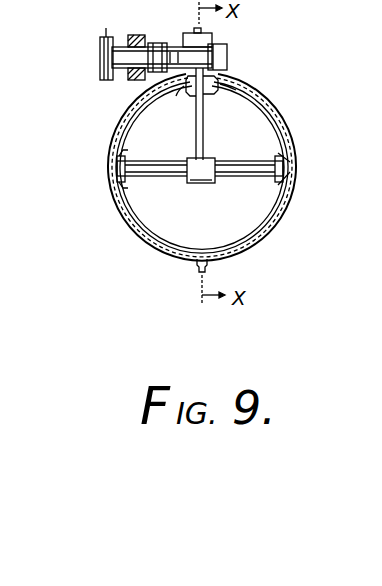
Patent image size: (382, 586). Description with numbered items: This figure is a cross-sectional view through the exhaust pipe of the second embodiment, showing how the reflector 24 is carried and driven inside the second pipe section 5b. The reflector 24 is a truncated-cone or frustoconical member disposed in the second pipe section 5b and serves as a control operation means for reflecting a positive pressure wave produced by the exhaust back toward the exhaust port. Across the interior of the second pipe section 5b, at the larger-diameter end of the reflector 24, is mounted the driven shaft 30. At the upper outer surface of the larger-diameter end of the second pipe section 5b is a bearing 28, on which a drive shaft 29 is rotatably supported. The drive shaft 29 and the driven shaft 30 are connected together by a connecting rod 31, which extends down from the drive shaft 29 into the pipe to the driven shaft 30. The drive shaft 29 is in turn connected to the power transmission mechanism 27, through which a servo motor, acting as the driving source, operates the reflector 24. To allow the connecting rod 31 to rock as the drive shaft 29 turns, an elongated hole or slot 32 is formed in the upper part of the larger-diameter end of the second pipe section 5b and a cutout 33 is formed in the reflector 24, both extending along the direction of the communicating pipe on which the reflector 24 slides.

The reflector 24 is at (113, 212).
The second pipe section 5b is at (281, 131).
The power transmission mechanism 27 is at (94, 31).
The bearing 28 is at (158, 47).
The drive shaft 29 is at (120, 73).
The driven shaft 30 is at (229, 165).
The connecting rod 31 is at (203, 120).
The elongated hole or slot 32 is at (232, 89).
The cutout 33 is at (190, 95).